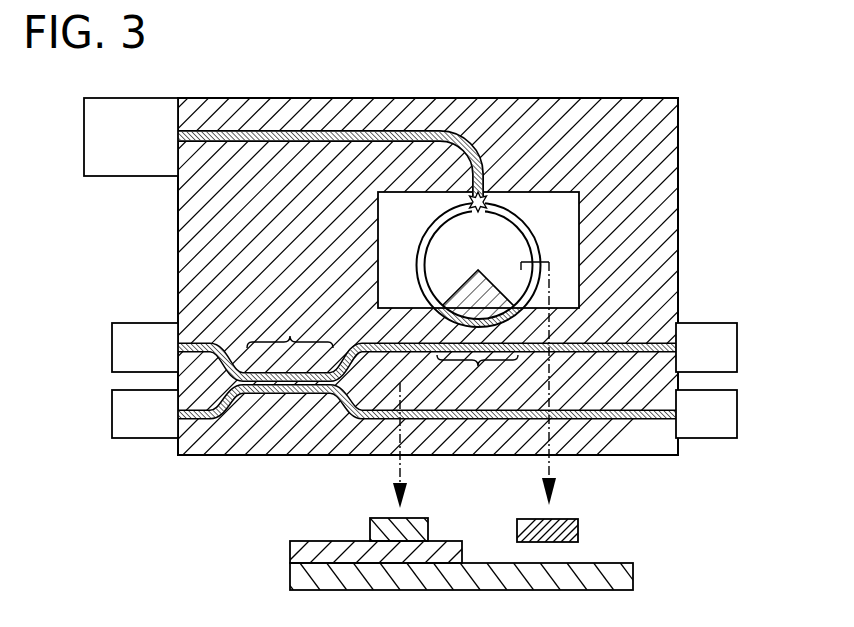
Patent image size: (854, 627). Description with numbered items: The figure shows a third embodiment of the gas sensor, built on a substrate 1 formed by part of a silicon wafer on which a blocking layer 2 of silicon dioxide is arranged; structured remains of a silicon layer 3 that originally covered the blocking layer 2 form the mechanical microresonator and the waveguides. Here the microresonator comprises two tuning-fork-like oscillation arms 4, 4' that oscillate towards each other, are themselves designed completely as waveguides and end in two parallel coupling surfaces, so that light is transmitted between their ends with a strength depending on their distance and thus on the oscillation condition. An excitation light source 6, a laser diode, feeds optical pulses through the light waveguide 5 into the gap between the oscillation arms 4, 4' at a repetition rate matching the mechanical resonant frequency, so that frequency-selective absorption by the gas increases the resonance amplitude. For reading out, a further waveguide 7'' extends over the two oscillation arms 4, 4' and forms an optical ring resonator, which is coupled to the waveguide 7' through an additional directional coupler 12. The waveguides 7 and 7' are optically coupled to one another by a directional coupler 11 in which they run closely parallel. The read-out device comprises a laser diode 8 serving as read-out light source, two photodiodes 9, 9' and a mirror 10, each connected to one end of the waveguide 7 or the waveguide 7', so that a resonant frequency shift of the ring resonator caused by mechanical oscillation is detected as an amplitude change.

The substrate 1 is at (625, 576).
The blocking layer 2 is at (670, 152).
The silicon layer 3 is at (428, 531).
The oscillation arm 4 is at (478, 259).
The oscillation arm 4' is at (575, 369).
The light waveguide 5 is at (296, 130).
The excitation light source 6 is at (84, 135).
The waveguide 7 is at (428, 444).
The waveguide 7' is at (449, 320).
The further waveguide 7'' is at (478, 287).
The laser diode 8 is at (112, 345).
The photodiode 9 is at (114, 414).
The photodiode 9' is at (738, 347).
The mirror 10 is at (737, 412).
The directional coupler 11 is at (290, 324).
The directional coupler 12 is at (477, 379).